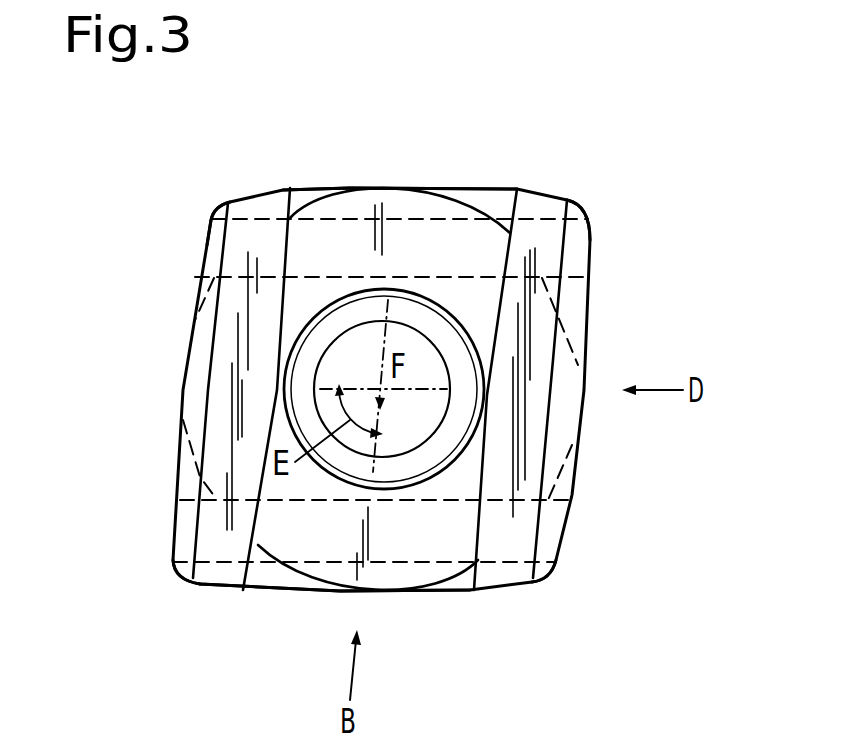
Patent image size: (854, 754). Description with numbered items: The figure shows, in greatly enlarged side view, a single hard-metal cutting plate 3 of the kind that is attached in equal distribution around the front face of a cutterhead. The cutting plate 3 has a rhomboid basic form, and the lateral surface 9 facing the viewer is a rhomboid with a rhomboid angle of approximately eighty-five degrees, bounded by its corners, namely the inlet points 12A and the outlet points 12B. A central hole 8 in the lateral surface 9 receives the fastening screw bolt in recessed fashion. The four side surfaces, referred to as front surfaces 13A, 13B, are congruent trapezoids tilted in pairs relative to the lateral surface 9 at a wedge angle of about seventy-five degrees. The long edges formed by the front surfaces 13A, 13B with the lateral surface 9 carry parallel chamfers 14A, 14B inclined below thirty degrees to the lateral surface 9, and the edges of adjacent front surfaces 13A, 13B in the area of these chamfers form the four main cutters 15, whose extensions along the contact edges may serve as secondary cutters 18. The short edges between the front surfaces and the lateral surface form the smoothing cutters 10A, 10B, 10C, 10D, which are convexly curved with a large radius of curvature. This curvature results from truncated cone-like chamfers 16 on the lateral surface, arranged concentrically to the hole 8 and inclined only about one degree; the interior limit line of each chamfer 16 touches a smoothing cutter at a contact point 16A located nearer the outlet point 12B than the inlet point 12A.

The cutting plate 3 is at (174, 194).
The central hole 8 is at (352, 350).
The lateral surface 9 is at (483, 307).
The smoothing cutter 10A is at (460, 593).
The smoothing cutter 10B is at (318, 187).
The smoothing cutter 10C is at (173, 448).
The smoothing cutter 10D is at (563, 465).
The inlet point 12A is at (507, 225).
The outlet point 12B is at (288, 187).
The front surface 13A is at (203, 344).
The front surface 13B is at (443, 212).
The chamfer 14A is at (223, 415).
The chamfer 14B is at (417, 240).
The main cutter 15 is at (555, 197).
The truncated cone-like chamfer 16 is at (302, 187).
The contact point 16A is at (385, 187).
The secondary cutter 18 is at (177, 570).